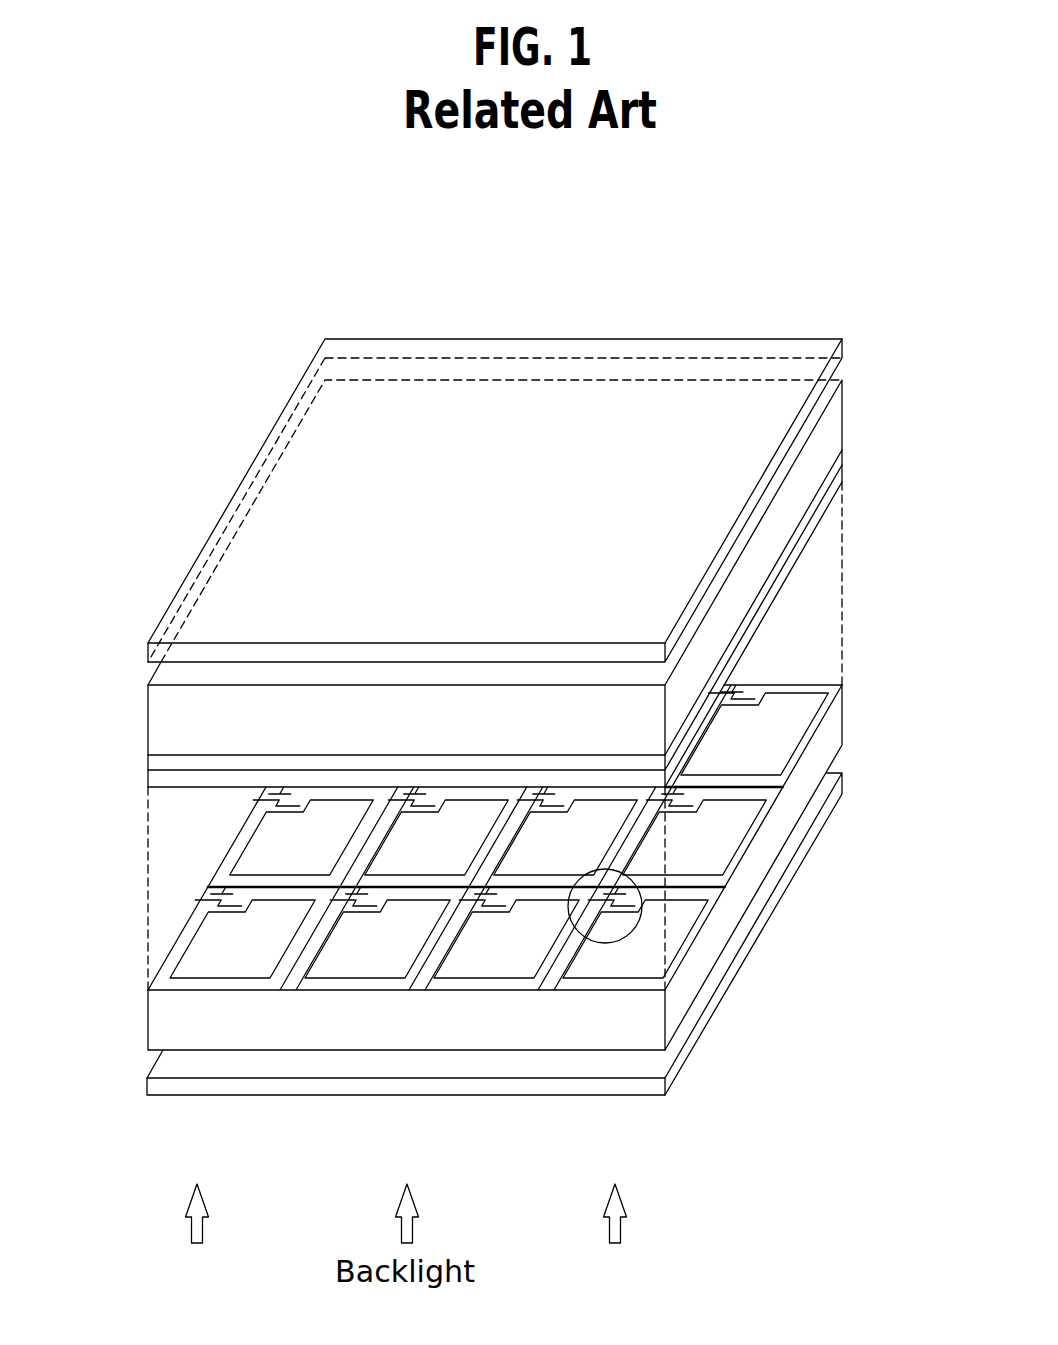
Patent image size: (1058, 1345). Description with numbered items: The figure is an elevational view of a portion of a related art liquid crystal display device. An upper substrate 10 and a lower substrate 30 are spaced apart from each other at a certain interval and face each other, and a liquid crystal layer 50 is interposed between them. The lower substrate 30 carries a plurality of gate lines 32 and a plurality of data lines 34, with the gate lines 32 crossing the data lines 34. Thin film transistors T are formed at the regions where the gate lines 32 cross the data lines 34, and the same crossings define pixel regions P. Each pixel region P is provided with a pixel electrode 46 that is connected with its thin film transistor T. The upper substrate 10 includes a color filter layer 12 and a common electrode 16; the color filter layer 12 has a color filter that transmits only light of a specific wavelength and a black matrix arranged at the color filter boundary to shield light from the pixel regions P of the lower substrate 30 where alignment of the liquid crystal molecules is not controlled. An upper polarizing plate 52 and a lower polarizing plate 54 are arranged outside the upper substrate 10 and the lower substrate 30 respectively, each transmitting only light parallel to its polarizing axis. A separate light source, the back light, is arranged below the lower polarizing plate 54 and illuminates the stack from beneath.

The upper polarizing plate 52 is at (803, 339).
The upper substrate 10 is at (501, 583).
The color filter layer 12 is at (842, 450).
The common electrode 16 is at (842, 477).
The liquid crystal layer 50 is at (457, 827).
The pixel electrode 46 is at (688, 927).
The gate line 32 is at (522, 887).
The data line 34 is at (557, 955).
The pixel region P is at (320, 990).
The thin film transistor T is at (613, 947).
The lower substrate 30 is at (148, 990).
The lower polarizing plate 54 is at (783, 880).